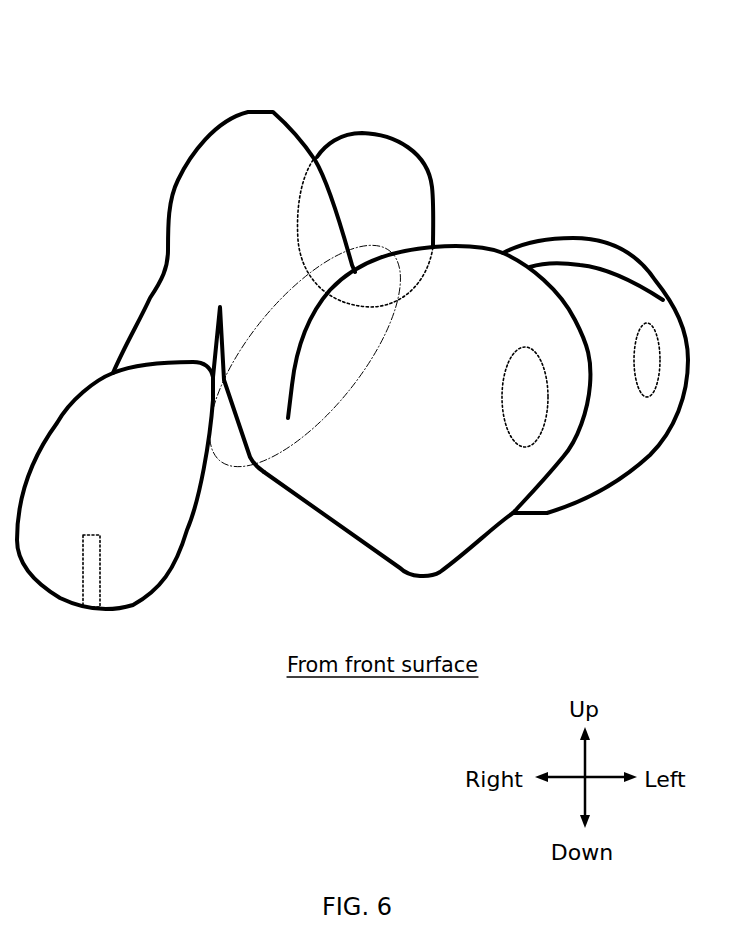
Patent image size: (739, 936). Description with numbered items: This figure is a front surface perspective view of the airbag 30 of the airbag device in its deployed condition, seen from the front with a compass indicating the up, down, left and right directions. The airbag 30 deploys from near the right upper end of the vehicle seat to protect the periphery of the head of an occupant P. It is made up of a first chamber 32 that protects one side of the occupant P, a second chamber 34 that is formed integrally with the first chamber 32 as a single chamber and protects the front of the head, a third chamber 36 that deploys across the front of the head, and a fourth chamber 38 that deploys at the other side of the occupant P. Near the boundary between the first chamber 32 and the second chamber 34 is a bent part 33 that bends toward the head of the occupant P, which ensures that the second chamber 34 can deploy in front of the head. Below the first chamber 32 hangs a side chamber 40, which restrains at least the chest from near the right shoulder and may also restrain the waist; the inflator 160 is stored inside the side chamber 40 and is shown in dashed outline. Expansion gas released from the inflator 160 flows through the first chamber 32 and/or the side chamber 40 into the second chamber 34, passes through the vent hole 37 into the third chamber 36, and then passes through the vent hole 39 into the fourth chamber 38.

The airbag 30 is at (235, 99).
The first chamber 32 is at (176, 216).
The occupant P is at (371, 132).
The bent part 33 is at (258, 470).
The second chamber 34 is at (372, 520).
The third chamber 36 is at (592, 493).
The vent hole 37 is at (524, 447).
The fourth chamber 38 is at (577, 250).
The vent hole 39 is at (647, 398).
The side chamber 40 is at (147, 585).
The inflator 160 is at (87, 607).